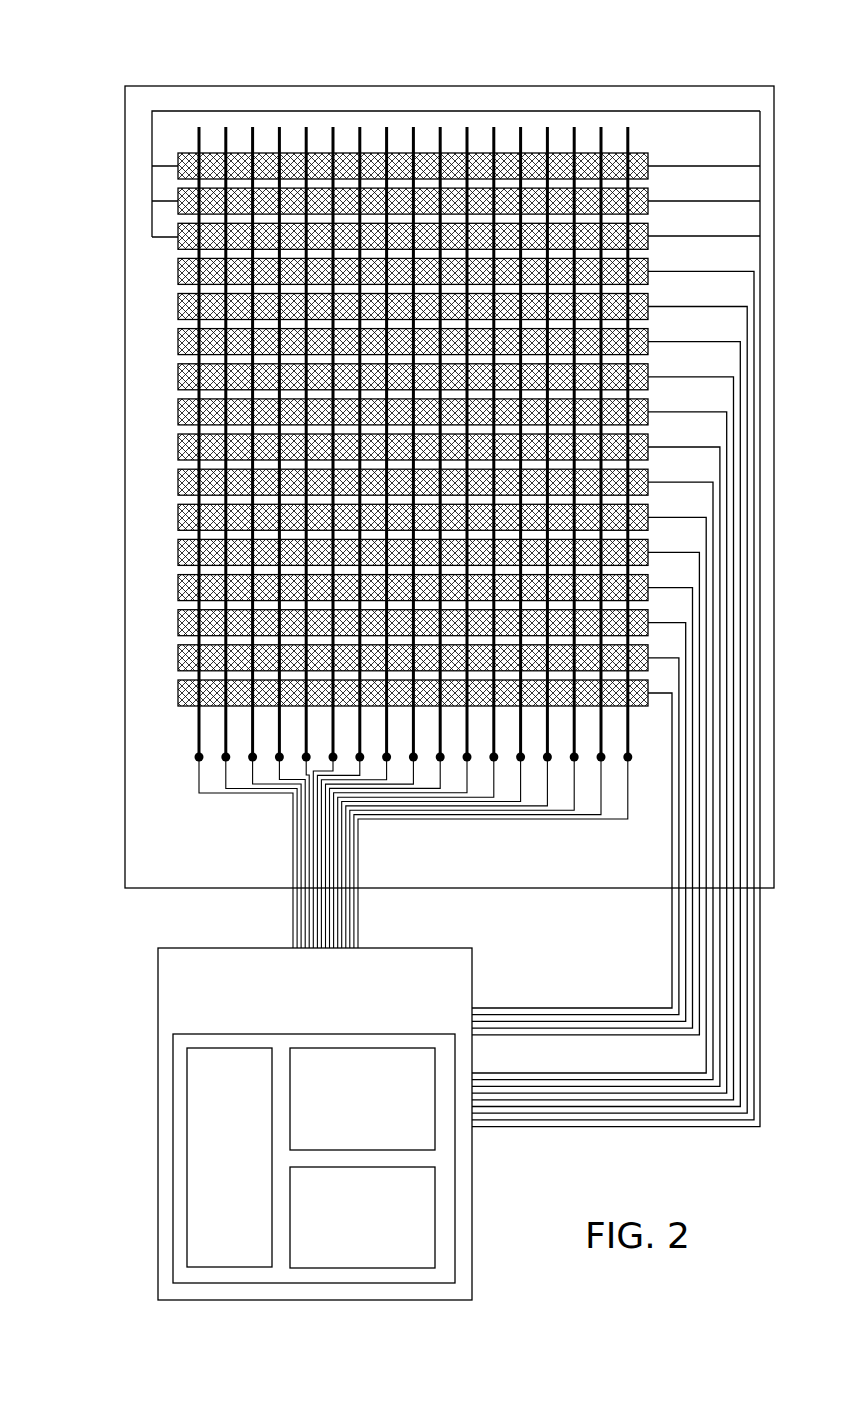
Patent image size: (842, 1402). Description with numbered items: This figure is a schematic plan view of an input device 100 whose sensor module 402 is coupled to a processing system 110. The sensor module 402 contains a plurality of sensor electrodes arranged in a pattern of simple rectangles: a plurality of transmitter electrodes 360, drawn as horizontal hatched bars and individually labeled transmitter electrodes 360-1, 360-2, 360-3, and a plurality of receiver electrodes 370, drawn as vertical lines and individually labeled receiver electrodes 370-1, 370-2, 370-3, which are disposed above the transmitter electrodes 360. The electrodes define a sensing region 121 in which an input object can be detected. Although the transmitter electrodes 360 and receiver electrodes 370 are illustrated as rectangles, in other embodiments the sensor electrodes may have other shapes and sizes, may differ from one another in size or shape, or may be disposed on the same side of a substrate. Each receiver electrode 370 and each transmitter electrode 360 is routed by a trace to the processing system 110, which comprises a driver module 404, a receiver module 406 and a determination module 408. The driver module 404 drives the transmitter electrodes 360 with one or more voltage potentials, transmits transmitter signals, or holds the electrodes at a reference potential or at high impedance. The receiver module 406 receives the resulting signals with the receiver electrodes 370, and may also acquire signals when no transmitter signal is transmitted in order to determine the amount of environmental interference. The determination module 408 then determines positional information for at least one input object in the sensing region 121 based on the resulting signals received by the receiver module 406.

The input device 100 is at (666, 56).
The processing system 110 is at (333, 1022).
The sensing region 121 is at (178, 726).
The transmitter electrodes 360 is at (110, 715).
The transmitter electrode 360-1 is at (178, 693).
The transmitter electrode 360-2 is at (178, 658).
The transmitter electrode 360-3 is at (178, 622).
The receiver electrodes 370 is at (188, 56).
The receiver electrode 370-1 is at (199, 127).
The receiver electrode 370-2 is at (226, 127).
The receiver electrode 370-3 is at (253, 127).
The sensor module 402 is at (455, 1177).
The driver module 404 is at (250, 1200).
The receiver module 406 is at (380, 1137).
The determination module 408 is at (380, 1255).